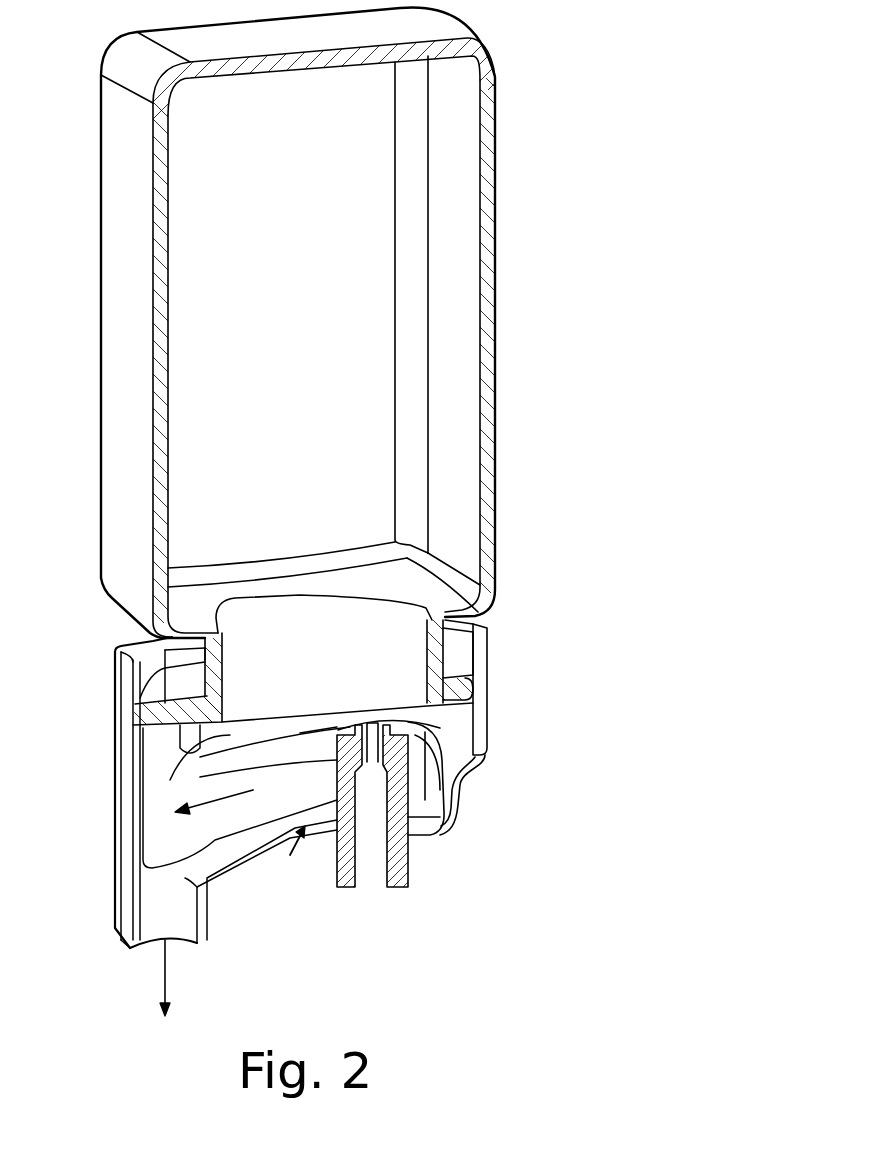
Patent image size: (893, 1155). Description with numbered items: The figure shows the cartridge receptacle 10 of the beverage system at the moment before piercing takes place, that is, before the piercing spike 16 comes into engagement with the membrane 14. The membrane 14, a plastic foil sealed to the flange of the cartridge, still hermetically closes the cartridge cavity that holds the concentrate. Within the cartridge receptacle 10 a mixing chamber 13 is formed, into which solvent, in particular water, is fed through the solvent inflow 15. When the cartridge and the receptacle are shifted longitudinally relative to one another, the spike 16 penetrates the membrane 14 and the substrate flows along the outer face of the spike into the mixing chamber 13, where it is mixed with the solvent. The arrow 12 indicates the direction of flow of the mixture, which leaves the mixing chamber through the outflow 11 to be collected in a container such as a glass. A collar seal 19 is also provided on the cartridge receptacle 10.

The cartridge receptacle 10 is at (127, 770).
The outflow 11 is at (169, 992).
The direction of flow 12 is at (205, 805).
The mixing chamber 13 is at (300, 862).
The membrane 14 is at (322, 703).
The solvent inflow 15 is at (483, 773).
The piercing spike 16 is at (372, 862).
The collar seal 19 is at (470, 687).